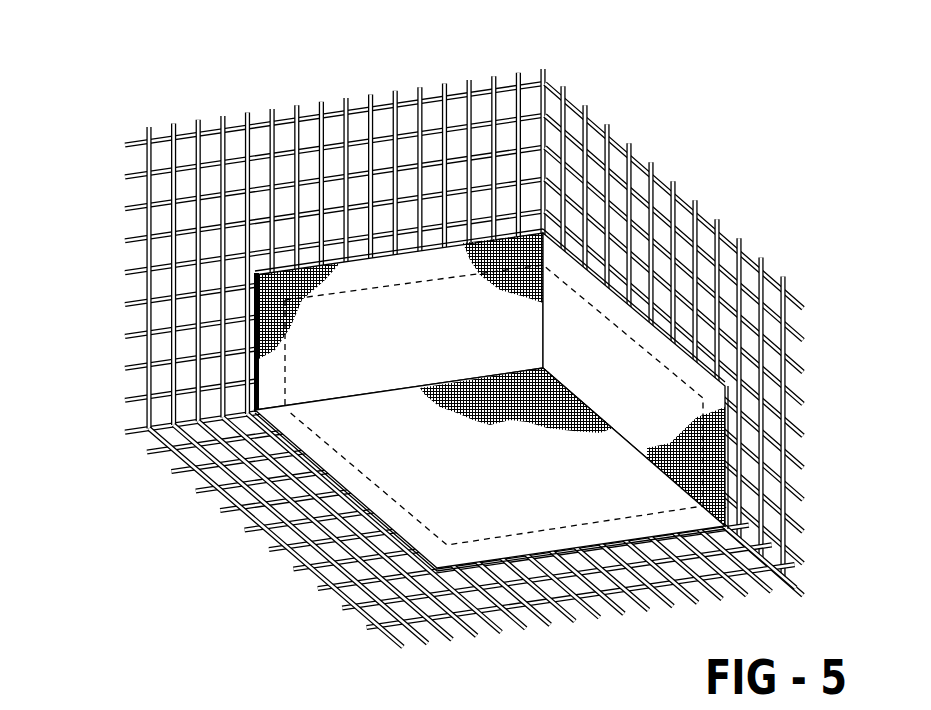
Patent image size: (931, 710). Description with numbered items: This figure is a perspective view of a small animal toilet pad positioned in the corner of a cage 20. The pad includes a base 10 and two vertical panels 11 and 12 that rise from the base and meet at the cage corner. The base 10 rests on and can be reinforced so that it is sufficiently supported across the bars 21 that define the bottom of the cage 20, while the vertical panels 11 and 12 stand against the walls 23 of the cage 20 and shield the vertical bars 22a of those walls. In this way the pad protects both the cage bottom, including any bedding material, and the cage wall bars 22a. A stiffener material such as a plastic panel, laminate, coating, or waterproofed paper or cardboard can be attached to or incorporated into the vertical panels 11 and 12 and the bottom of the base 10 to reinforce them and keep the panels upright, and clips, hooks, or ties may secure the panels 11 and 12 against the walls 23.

The base 10 is at (491, 400).
The vertical panel 11 is at (320, 372).
The vertical panel 12 is at (640, 435).
The cage 20 is at (458, 338).
The bars 21 is at (273, 555).
The vertical bars 22a is at (143, 158).
The walls 23 is at (119, 113).